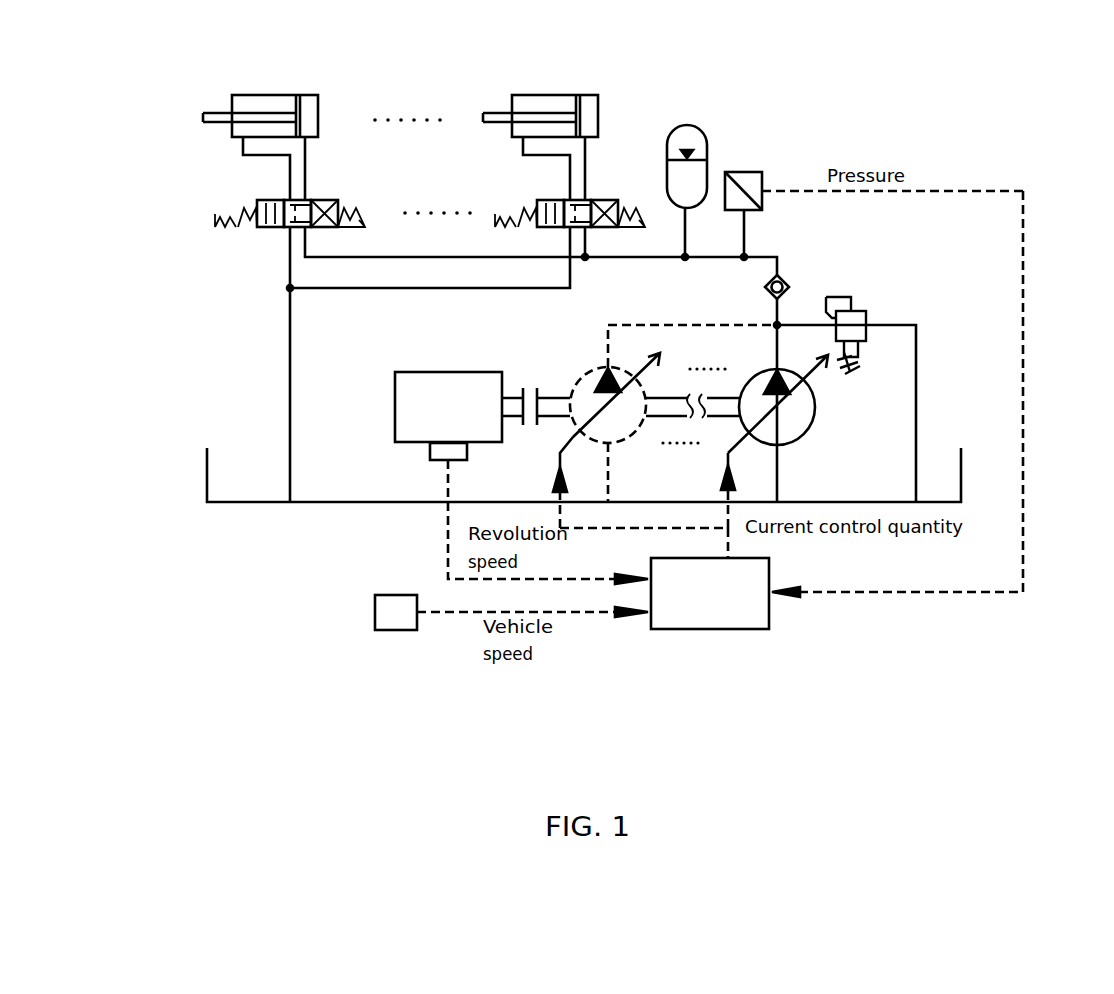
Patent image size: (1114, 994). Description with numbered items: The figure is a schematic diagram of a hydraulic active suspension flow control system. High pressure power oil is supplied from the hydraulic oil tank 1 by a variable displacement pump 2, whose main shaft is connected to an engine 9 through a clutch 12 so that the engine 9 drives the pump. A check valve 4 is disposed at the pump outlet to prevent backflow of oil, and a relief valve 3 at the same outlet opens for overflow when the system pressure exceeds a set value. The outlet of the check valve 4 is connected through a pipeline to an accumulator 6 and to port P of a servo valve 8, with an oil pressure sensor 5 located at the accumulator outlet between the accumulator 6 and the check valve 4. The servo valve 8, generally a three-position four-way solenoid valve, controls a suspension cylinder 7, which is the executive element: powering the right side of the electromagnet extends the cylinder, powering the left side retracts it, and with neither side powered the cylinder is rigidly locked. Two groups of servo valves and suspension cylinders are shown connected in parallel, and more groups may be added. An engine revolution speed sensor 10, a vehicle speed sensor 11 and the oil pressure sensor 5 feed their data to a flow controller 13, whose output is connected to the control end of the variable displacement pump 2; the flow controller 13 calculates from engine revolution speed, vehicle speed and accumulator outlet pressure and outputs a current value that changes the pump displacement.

The hydraulic oil tank 1 is at (961, 478).
The variable displacement pump 2 is at (805, 410).
The relief valve 3 is at (860, 334).
The check valve 4 is at (777, 287).
The oil pressure sensor 5 is at (745, 181).
The accumulator 6 is at (685, 143).
The suspension cylinder 7 is at (290, 108).
The servo valve 8 is at (248, 213).
The engine 9 is at (405, 407).
The engine revolution speed sensor 10 is at (445, 453).
The vehicle speed sensor 11 is at (397, 612).
The clutch 12 is at (530, 406).
The flow controller 13 is at (743, 617).